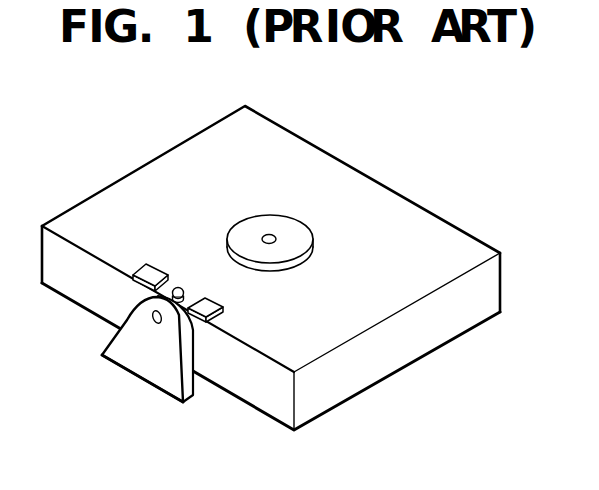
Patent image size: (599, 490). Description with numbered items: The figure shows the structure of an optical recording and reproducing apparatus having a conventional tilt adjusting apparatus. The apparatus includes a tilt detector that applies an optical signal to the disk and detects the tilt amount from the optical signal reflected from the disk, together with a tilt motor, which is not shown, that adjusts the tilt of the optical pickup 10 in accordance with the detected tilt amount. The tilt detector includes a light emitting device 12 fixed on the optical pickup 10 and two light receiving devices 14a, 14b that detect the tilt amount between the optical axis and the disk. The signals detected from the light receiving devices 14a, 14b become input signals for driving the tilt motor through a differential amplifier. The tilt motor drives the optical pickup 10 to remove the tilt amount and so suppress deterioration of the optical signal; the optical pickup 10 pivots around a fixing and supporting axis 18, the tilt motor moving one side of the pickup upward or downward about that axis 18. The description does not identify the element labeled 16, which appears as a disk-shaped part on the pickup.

The optical pickup 10 is at (455, 247).
The light emitting device 12 is at (183, 287).
The light receiving device 14a is at (150, 268).
The light receiving device 14b is at (204, 313).
The disc / rotary member 16 is at (295, 242).
The fixing and supporting axis 18 is at (153, 315).